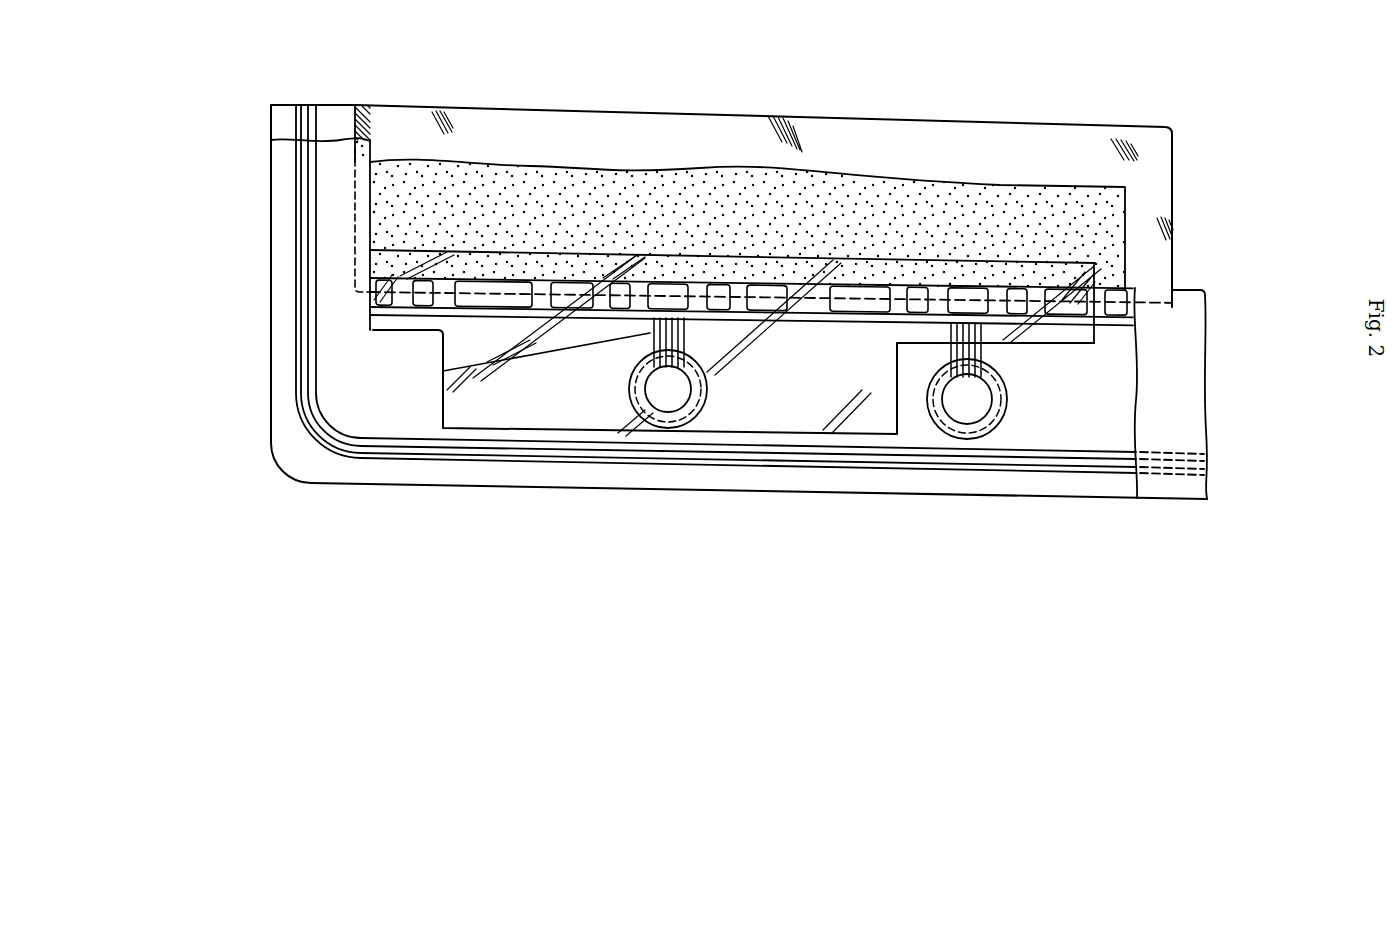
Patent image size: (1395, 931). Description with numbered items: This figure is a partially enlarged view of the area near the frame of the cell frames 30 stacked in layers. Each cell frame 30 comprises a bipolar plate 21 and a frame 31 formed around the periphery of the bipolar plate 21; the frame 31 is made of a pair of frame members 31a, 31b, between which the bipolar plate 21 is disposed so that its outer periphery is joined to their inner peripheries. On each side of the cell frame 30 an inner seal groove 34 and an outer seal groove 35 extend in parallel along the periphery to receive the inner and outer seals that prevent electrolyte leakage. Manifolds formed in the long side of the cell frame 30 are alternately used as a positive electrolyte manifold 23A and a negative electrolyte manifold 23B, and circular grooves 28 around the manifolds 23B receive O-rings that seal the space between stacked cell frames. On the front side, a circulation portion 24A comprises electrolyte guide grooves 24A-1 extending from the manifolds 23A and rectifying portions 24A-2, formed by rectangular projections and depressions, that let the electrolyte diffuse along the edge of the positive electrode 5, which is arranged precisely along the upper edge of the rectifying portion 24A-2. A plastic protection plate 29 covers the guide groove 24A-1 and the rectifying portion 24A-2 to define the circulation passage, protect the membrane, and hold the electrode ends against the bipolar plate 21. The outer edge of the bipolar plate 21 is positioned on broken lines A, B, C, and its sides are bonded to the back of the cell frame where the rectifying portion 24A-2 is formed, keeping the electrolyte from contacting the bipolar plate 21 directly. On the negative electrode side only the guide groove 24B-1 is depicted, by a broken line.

The bipolar plate 21 is at (1157, 176).
The positive electrode 5 is at (1113, 273).
The circulation portion 24A is at (115, 278).
The electrolyte guide groove 24A-1 is at (443, 372).
The rectifying portion 24A-2 is at (372, 277).
The protection plate 29 is at (458, 383).
The cell frame 30 is at (545, 513).
The positive electrolyte manifold 23A is at (642, 430).
The negative electrolyte manifold 23B is at (975, 440).
The circular groove 28 is at (935, 415).
The guide groove 24B-1 is at (988, 350).
The inner seal groove 34 is at (780, 455).
The outer seal groove 35 is at (720, 467).
The frame 31 is at (1190, 598).
The frame member 31a is at (1115, 488).
The frame member 31b is at (1182, 490).
The broken line A is at (358, 105).
The broken line B is at (357, 290).
The broken line C is at (1172, 303).